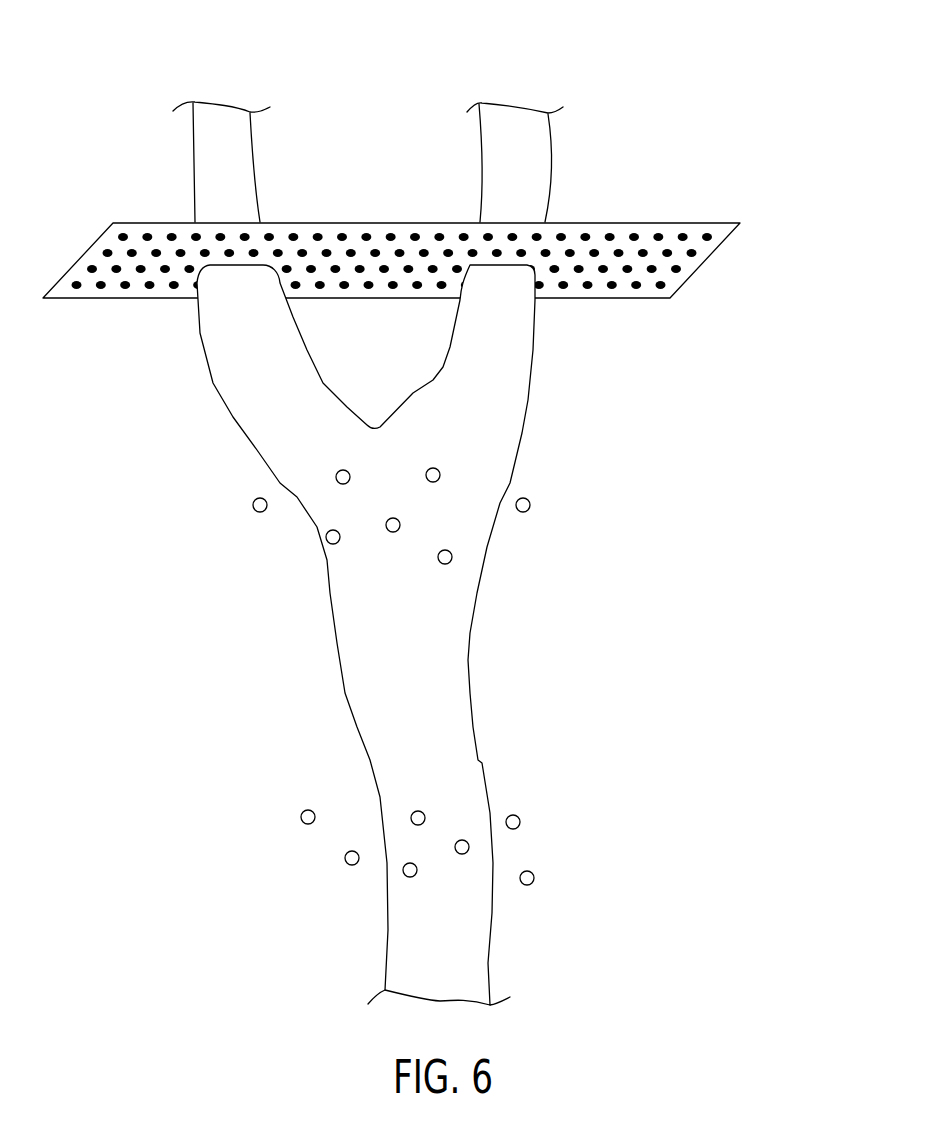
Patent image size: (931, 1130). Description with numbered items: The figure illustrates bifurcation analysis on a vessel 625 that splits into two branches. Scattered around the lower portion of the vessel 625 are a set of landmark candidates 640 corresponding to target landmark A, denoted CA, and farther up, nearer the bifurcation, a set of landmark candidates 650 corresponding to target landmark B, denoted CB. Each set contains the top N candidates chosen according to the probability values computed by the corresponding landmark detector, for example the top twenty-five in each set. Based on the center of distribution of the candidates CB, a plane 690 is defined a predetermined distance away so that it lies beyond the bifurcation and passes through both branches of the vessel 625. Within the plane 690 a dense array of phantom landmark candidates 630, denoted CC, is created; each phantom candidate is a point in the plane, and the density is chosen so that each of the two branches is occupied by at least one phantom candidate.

The vessel 625 is at (580, 63).
The plane 690 is at (683, 222).
The phantom landmark candidates 630 is at (613, 292).
The landmark candidates corresponding to target landmark A 640 is at (420, 811).
The landmark candidates corresponding to target landmark B 650 is at (262, 513).
The set of landmark candidates for target landmark A CA is at (598, 861).
The set of landmark candidates for target landmark B CB is at (572, 512).
The set of phantom landmark candidates CC is at (733, 227).